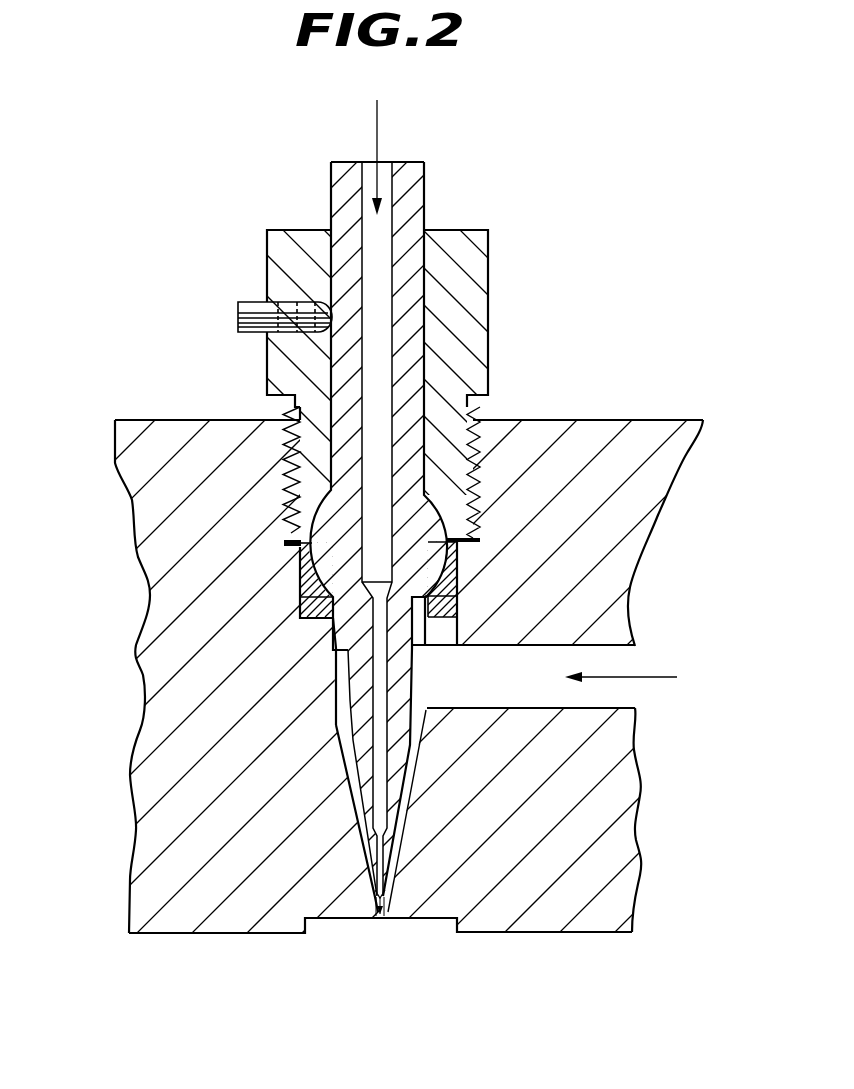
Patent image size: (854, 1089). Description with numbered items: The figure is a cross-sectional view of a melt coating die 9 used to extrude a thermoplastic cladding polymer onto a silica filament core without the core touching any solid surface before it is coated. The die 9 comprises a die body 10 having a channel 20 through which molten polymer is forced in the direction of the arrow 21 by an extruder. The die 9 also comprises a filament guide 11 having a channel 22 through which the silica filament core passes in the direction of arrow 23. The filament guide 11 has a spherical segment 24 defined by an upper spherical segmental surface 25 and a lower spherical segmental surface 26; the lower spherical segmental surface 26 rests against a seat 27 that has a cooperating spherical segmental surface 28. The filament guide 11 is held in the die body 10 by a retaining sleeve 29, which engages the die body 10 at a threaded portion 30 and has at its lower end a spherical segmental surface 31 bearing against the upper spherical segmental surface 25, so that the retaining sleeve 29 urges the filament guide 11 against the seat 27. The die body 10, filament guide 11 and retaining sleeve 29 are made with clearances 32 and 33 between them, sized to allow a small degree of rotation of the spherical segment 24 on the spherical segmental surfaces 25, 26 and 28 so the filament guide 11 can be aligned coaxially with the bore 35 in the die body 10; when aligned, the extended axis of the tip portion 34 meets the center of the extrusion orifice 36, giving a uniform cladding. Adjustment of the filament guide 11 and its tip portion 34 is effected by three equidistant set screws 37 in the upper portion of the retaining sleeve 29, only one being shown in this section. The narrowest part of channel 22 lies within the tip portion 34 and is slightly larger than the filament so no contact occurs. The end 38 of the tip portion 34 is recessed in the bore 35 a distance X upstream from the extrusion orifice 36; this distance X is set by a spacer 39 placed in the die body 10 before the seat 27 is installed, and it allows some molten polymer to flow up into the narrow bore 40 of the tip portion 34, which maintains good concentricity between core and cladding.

The melt coating die 9 is at (131, 642).
The die body 10 is at (208, 923).
The filament guide 11 is at (410, 190).
The channel 20 is at (518, 692).
The arrow 21 is at (660, 677).
The channel 22 is at (364, 259).
The arrow 23 is at (378, 123).
The spherical segment 24 is at (428, 566).
The upper spherical segmental surface 25 is at (313, 512).
The lower spherical segmental surface 26 is at (322, 558).
The seat 27 is at (305, 578).
The cooperating spherical segmental surface 28 is at (302, 592).
The retaining sleeve 29 is at (475, 272).
The threaded portion 30 is at (473, 428).
The spherical segmental surface 31 is at (440, 513).
The clearance 32 is at (330, 233).
The clearance 33 is at (337, 657).
The tip portion 34 is at (390, 840).
The bore 35 is at (336, 712).
The extrusion orifice 36 is at (377, 907).
The set screw 37 is at (248, 318).
The end 38 is at (373, 900).
The spacer 39 is at (457, 613).
The narrow bore 40 is at (375, 848).
The recess distance X is at (383, 907).